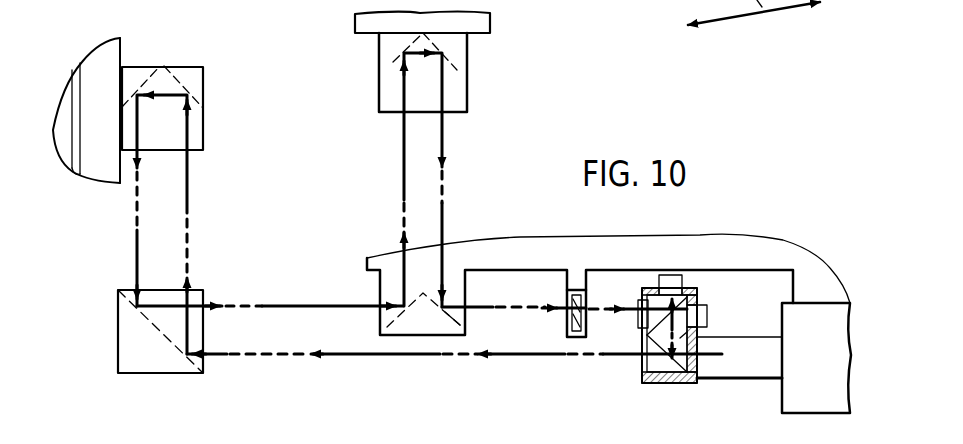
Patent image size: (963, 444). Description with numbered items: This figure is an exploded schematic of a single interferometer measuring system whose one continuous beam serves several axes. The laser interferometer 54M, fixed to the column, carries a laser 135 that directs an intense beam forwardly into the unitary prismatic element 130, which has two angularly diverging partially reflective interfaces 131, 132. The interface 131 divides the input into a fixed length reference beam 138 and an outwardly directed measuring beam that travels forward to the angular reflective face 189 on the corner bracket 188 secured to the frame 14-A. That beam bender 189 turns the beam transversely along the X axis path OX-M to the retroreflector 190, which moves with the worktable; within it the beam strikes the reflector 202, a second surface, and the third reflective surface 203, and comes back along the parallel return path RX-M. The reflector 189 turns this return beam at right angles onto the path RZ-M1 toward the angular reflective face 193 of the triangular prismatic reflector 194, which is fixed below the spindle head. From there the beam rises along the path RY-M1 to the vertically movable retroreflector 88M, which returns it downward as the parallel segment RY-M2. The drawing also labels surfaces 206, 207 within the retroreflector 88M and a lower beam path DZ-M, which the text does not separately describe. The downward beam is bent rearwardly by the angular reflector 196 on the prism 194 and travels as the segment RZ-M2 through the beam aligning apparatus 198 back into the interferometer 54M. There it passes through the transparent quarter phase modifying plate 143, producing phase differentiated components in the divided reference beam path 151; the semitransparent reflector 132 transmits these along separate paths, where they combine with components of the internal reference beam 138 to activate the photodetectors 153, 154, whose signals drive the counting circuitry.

The retroreflector 190 is at (205, 80).
The third reflective surface 203 is at (153, 80).
The reflector 202 is at (172, 83).
The angular reflective face 189 is at (160, 327).
The corner bracket 188 is at (148, 363).
The vertically movable retroreflector 88M is at (467, 53).
The reflecting surface 206 is at (390, 73).
The reflecting surface 207 is at (452, 72).
The angular reflective face 193 is at (417, 298).
The triangular prismatic reflector 194 is at (420, 325).
The angular reflector 196 is at (457, 322).
The beam aligning apparatus 198 is at (576, 288).
The laser interferometer 54M is at (682, 386).
The unitary prismatic element 130 is at (643, 345).
The partially reflective beam dividing interface 131 is at (657, 352).
The semitransparent reflector 132 is at (663, 308).
The divided reference beam path 151 is at (668, 296).
The photodetector 153 is at (673, 283).
The quarter phase modifying plate 143 is at (639, 306).
The photodetector 154 is at (706, 313).
The fixed length reference beam 138 is at (678, 338).
The laser 135 is at (745, 368).
The frame 14-A is at (662, 0).
The return beam segment RX-M is at (133, 233).
The output beam path OX-M is at (193, 207).
The upwardly directed beam path RY-M1 is at (402, 152).
The downwardly directed beam segment RY-M2 is at (447, 142).
The transverse return beam path RZ-M1 is at (285, 303).
The Z axis return beam segment RZ-M2 is at (482, 303).
The measuring beam DZ DZ-M is at (423, 360).